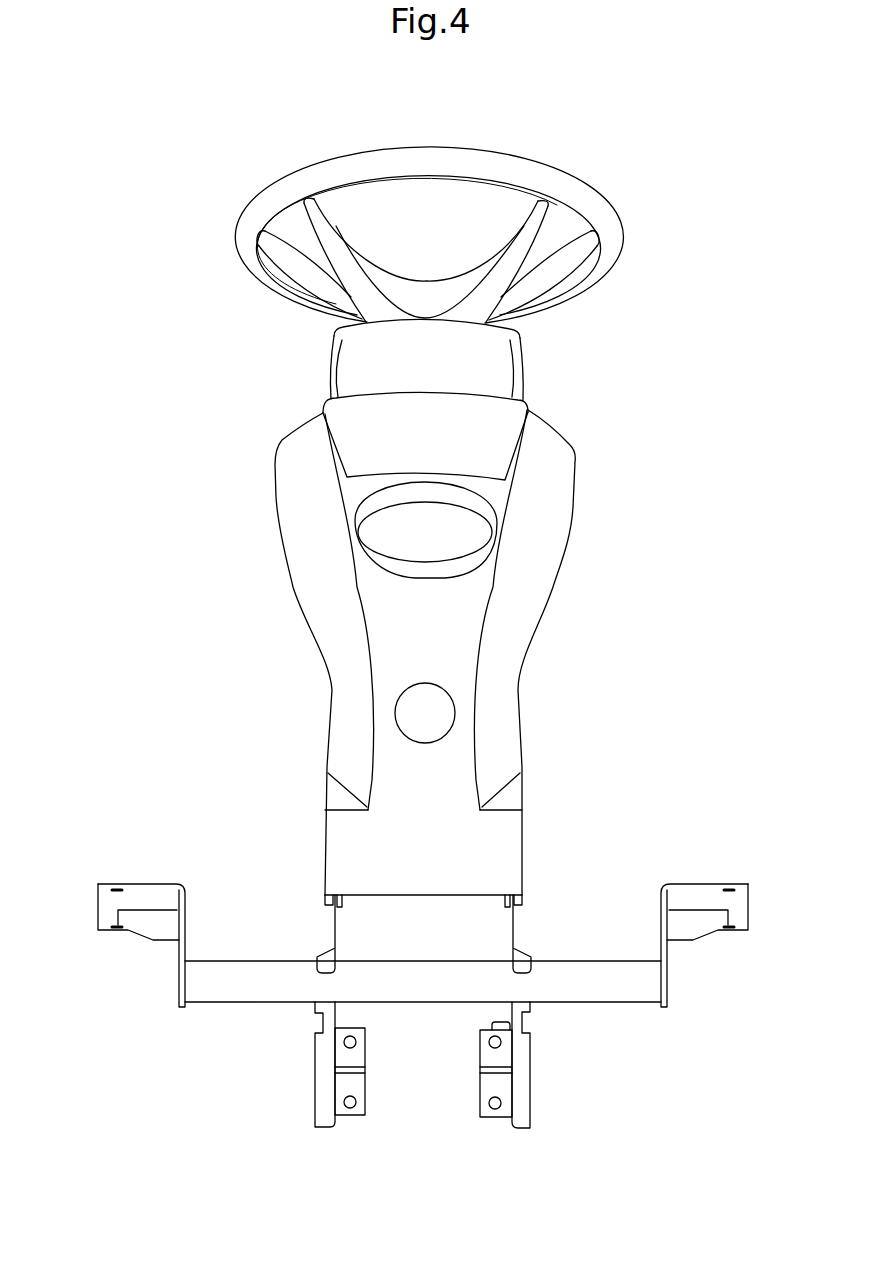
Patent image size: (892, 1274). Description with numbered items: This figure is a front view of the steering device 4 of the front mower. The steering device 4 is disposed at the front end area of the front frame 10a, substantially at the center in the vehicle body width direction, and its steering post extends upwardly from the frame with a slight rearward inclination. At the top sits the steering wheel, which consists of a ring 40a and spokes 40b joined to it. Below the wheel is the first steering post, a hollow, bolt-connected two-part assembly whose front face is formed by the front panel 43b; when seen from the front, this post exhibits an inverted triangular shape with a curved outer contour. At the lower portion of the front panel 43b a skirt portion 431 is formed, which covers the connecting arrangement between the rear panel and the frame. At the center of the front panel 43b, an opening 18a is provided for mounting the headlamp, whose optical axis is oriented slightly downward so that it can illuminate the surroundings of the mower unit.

The steering device 4 is at (272, 338).
The ring 40a is at (470, 150).
The spokes 40b is at (335, 227).
The front panel 43b is at (303, 555).
The opening 18a is at (425, 503).
The skirt portion 431 is at (492, 836).
The front frame 10a is at (607, 980).